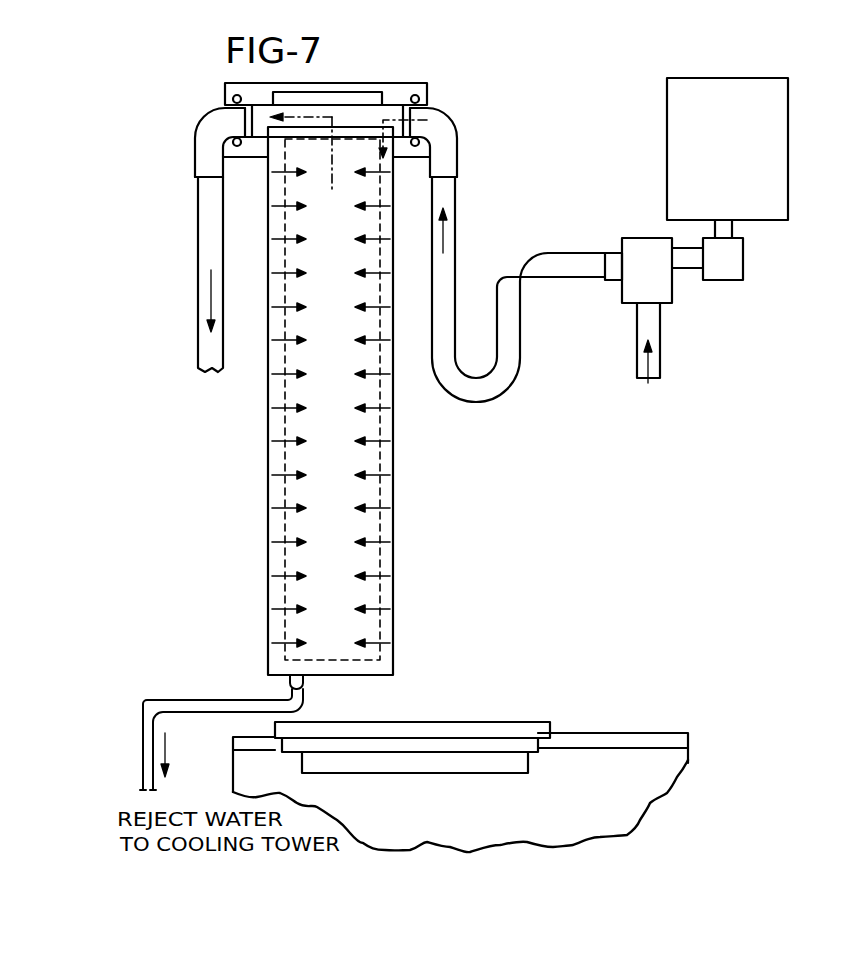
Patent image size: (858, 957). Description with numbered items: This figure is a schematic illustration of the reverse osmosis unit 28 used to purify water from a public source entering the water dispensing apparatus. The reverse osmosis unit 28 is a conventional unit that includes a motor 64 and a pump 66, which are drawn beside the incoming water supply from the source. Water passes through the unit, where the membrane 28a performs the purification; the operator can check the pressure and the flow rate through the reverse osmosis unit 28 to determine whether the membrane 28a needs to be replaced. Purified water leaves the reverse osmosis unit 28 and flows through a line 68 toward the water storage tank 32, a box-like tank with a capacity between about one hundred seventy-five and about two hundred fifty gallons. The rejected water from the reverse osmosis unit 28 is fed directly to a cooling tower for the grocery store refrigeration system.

The reverse osmosis unit 28 is at (478, 224).
The membrane 28a is at (285, 496).
The water storage tank 32 is at (603, 764).
The motor 64 is at (672, 152).
The pump 66 is at (730, 275).
The line 68 is at (198, 272).